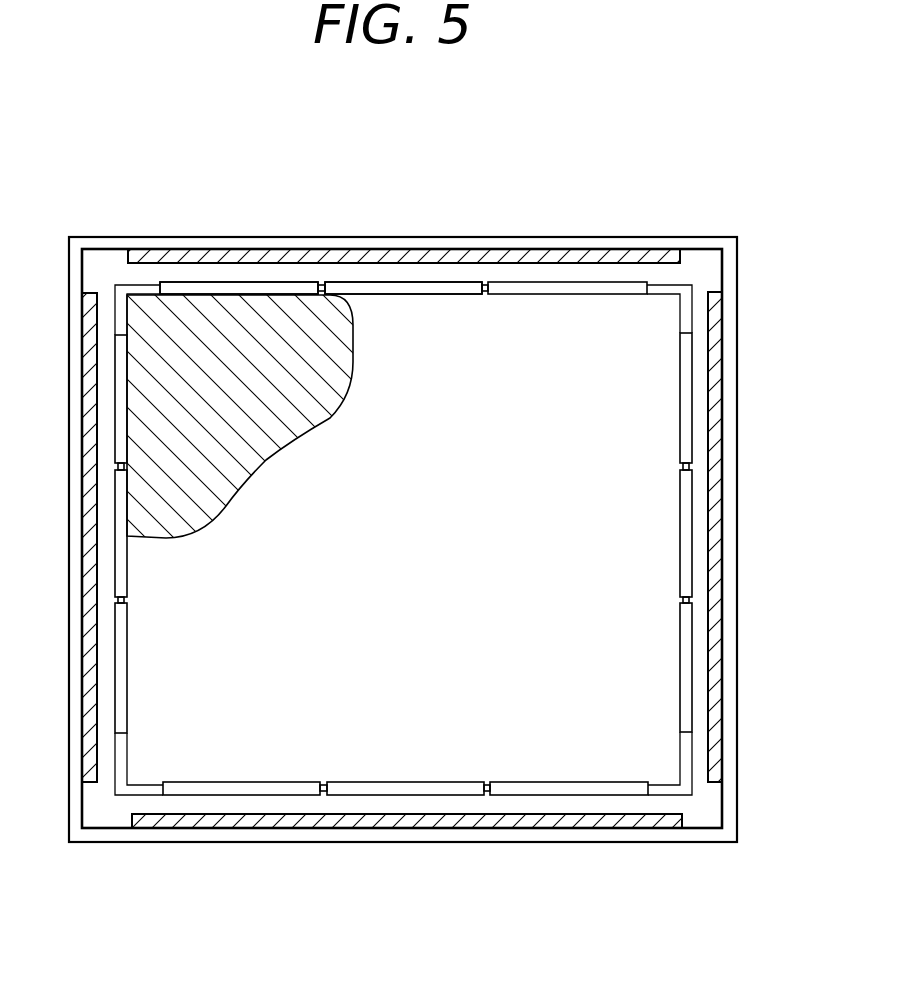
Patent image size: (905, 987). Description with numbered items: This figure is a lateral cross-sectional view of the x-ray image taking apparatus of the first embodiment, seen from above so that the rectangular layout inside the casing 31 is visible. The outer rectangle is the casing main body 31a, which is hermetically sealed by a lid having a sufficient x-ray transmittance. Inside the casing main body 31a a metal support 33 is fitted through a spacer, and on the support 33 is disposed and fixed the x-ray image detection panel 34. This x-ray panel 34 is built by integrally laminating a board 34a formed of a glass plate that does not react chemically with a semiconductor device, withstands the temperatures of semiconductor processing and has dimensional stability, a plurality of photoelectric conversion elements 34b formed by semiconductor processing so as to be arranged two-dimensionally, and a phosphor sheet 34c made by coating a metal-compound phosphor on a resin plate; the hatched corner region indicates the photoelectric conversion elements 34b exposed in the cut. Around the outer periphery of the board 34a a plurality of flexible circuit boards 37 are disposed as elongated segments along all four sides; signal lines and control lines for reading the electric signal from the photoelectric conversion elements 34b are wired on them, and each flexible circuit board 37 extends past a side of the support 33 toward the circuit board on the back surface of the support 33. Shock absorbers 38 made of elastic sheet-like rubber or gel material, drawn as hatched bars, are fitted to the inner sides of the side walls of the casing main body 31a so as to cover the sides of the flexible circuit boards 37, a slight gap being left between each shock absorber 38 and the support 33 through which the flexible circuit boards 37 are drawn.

The casing 31 is at (752, 301).
The casing main body 31a is at (525, 243).
The support 33 is at (118, 286).
The x-ray image detection panel 34 is at (304, 313).
The board 34a is at (147, 290).
The photoelectric conversion elements 34b is at (250, 317).
The phosphor sheet 34c is at (428, 347).
The flexible circuit boards 37 is at (595, 282).
The shock absorbers 38 is at (668, 258).